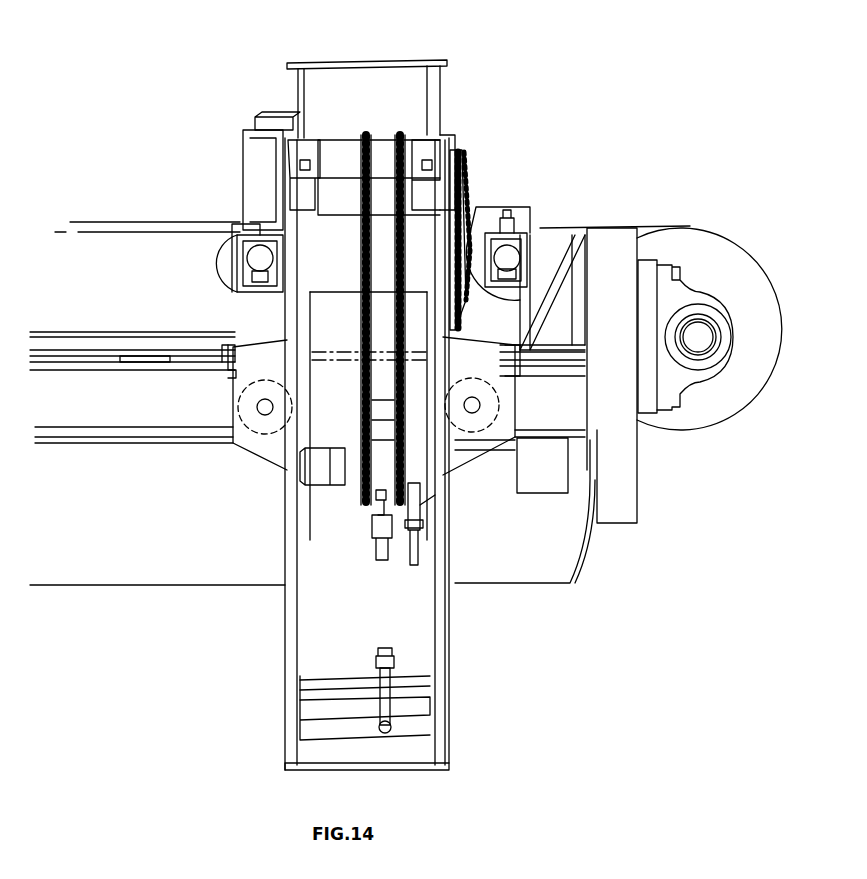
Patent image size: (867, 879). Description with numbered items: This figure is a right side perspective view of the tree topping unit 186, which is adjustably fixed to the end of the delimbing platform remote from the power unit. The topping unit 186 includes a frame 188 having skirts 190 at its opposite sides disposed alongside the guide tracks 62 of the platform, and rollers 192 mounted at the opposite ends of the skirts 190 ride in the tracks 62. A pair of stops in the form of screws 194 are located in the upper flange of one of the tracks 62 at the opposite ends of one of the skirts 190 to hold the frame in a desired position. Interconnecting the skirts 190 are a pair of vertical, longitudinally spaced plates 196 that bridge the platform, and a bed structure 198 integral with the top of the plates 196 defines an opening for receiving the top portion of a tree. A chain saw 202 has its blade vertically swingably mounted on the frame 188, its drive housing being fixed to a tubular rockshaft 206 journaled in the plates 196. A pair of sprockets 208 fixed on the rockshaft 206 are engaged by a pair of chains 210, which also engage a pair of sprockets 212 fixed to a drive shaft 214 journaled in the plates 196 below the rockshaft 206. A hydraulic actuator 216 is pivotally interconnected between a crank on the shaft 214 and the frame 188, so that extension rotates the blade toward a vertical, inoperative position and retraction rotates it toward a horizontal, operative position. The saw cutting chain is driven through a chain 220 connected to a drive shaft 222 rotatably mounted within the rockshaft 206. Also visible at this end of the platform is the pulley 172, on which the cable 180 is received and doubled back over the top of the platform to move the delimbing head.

The guide tracks 62 is at (61, 430).
The pulley 172 is at (753, 270).
The cable 180 is at (131, 220).
The tree topping unit 186 is at (513, 135).
The frame 188 is at (436, 128).
The skirts 190 is at (238, 385).
The rollers 192 is at (257, 432).
The screws 194 is at (224, 345).
The plates 196 is at (303, 303).
The bed structure 198 is at (366, 62).
The chain saw 202 is at (266, 126).
The rockshaft 206 is at (396, 146).
The sprockets 208 is at (392, 144).
The chains 210 is at (395, 388).
The sprockets 212 is at (397, 468).
The drive shaft 214 is at (343, 452).
The hydraulic actuator 216 is at (378, 605).
The chain 220 is at (470, 200).
The drive shaft 222 is at (468, 172).